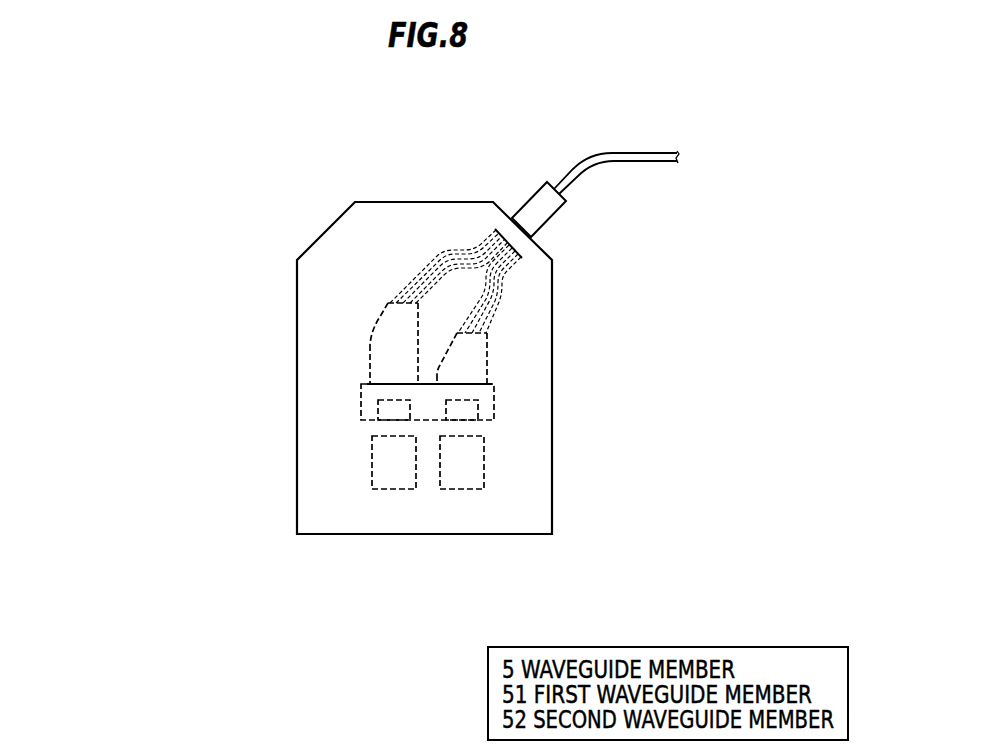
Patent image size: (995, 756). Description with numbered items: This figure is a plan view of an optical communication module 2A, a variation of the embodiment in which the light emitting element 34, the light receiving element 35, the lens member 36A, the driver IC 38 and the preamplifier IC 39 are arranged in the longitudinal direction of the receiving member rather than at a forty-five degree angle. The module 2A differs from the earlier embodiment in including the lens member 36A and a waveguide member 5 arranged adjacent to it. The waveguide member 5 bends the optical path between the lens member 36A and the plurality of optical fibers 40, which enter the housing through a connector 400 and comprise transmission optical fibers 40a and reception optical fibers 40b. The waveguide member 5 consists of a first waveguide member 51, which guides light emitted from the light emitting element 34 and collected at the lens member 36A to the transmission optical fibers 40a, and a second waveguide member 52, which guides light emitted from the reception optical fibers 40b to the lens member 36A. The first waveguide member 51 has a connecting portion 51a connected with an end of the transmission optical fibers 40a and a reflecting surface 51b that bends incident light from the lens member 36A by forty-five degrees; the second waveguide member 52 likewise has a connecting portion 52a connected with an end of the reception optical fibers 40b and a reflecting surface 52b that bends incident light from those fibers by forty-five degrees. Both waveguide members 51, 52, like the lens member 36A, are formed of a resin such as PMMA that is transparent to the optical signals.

The optical communication module 2A is at (343, 175).
The optical fibers 40 is at (628, 158).
The connector 400 is at (532, 213).
The transmission optical fibers 40a is at (447, 250).
The reception optical fibers 40b is at (487, 323).
The waveguide member 5 is at (345, 325).
The first waveguide member 51 is at (329, 325).
The second waveguide member 52 is at (363, 333).
The connecting portion 51a is at (388, 303).
The reflecting surface 51b is at (377, 326).
The connecting portion 52a is at (458, 333).
The reflecting surface 52b is at (448, 346).
The lens member 36A is at (494, 403).
The light emitting element 34 is at (378, 410).
The light receiving element 35 is at (478, 410).
The driver IC 38 is at (372, 475).
The preamplifier IC 39 is at (484, 476).